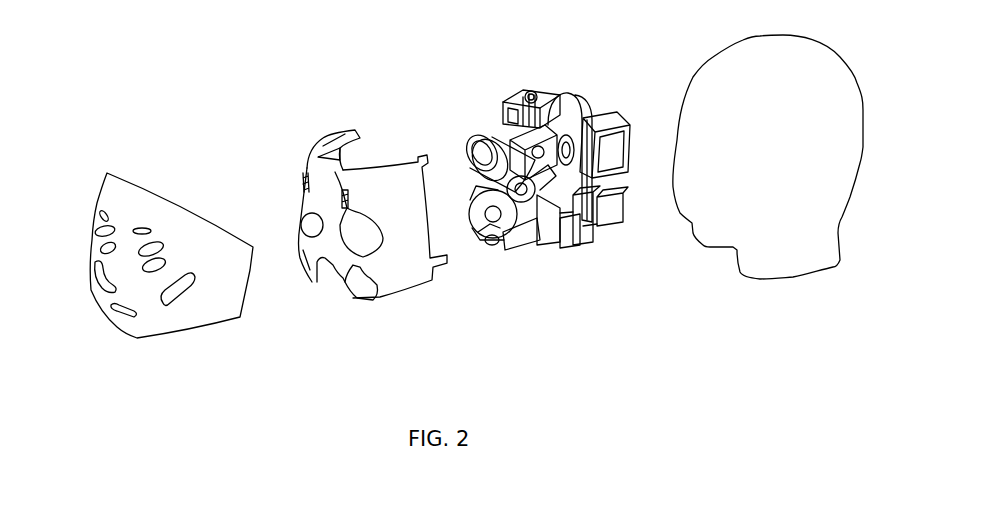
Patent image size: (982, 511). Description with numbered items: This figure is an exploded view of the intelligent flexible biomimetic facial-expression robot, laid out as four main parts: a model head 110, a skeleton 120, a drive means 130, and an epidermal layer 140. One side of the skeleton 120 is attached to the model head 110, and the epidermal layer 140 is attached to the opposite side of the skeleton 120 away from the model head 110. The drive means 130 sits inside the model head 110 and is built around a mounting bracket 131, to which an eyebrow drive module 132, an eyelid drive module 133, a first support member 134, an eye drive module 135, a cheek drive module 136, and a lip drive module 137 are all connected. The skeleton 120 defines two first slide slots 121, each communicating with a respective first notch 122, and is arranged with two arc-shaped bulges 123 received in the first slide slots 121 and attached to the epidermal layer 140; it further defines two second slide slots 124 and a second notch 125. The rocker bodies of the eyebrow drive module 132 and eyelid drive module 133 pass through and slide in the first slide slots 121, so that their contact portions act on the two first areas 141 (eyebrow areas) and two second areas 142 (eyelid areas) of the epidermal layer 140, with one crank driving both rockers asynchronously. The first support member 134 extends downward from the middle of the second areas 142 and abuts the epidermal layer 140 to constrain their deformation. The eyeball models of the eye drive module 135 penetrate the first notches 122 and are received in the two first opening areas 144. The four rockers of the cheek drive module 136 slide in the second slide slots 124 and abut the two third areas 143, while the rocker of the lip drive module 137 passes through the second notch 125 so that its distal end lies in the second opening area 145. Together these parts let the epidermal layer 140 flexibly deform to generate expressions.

The model head 110 is at (788, 88).
The skeleton 120 is at (347, 232).
The first slide slot 121 is at (347, 172).
The first notch 122 is at (340, 215).
The bulge 123 is at (304, 172).
The second slide slot 124 is at (377, 293).
The second notch 125 is at (310, 288).
The drive means 130 is at (538, 173).
The mounting bracket 131 is at (578, 116).
The eyebrow drive module 132 is at (535, 90).
The eyelid drive module 133 is at (502, 100).
The first support member 134 is at (480, 136).
The eye drive module 135 is at (584, 222).
The cheek drive module 136 is at (540, 242).
The lip drive module 137 is at (488, 250).
The epidermal layer 140 is at (143, 256).
The first area 141 is at (100, 211).
The second area 142 is at (98, 229).
The third area 143 is at (93, 268).
The first opening area 144 is at (100, 248).
The second opening area 145 is at (108, 310).